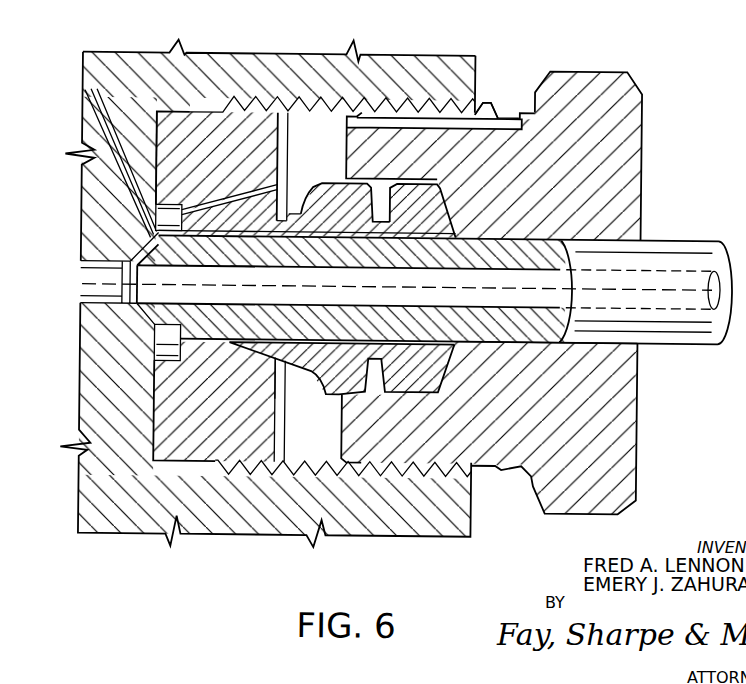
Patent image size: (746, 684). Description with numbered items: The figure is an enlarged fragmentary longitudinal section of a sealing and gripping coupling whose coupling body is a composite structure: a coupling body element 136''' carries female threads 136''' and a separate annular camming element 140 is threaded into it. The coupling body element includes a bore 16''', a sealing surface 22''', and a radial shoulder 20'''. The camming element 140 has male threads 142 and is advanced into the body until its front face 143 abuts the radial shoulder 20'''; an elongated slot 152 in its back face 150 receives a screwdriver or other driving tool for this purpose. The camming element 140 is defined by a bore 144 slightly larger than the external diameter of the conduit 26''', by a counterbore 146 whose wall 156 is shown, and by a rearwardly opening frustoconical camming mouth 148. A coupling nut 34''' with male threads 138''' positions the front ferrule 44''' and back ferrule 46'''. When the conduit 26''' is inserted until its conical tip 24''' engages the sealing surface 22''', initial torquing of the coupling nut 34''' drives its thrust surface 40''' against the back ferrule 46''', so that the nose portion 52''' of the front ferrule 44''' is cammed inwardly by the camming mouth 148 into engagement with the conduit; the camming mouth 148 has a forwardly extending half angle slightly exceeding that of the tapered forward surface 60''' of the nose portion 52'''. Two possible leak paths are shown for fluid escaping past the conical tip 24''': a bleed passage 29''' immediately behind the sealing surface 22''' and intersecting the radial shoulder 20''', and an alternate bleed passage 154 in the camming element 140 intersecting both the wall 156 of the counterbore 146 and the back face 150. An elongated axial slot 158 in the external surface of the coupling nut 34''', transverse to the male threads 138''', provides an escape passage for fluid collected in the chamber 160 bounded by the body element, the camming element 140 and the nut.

The bore 16''' is at (79, 312).
The radial shoulder 20''' is at (174, 138).
The sealing surface 22''' is at (125, 270).
The conical tip 24''' is at (165, 282).
The conduit 26''' is at (546, 363).
The bleed passage 29''' is at (121, 155).
The coupling nut 34''' is at (566, 274).
The thrust surface 40''' is at (449, 211).
The front ferrule 44''' is at (406, 282).
The back ferrule 46''' is at (379, 225).
The nose portion 52''' is at (293, 261).
The tapered forward surface 60''' is at (301, 288).
The female threads 136''' is at (267, 287).
The male threads 138''' is at (510, 72).
The camming element 140 is at (186, 412).
The male threads 142 is at (279, 76).
The front face 143 is at (170, 168).
The bore 144 is at (222, 234).
The counterbore 146 is at (169, 363).
The camming mouth 148 is at (250, 226).
The back face 150 is at (285, 405).
The elongated slot 152 is at (286, 435).
The bleed passage 154 is at (236, 199).
The wall 156 is at (161, 351).
The elongated axial slot 158 is at (484, 119).
The chamber 160 is at (313, 458).